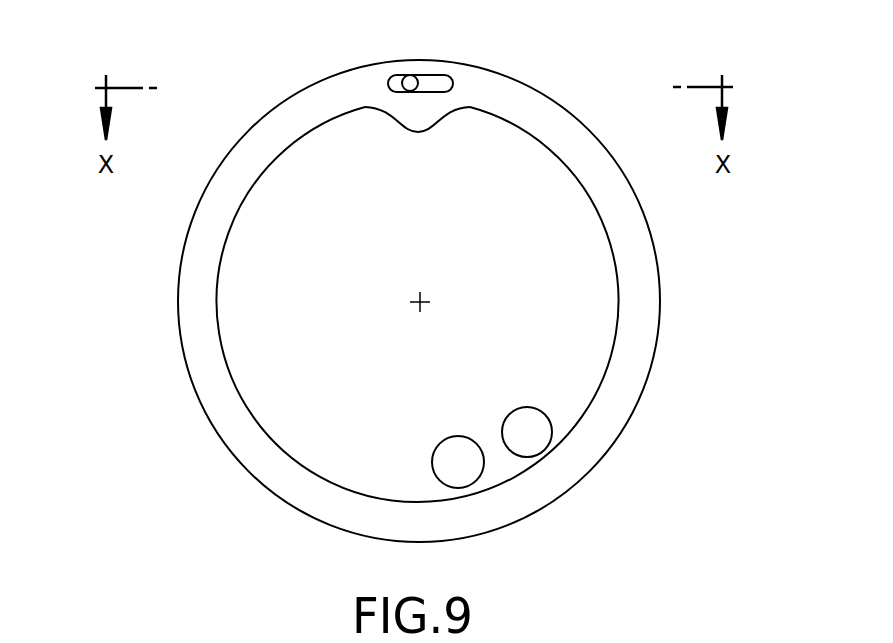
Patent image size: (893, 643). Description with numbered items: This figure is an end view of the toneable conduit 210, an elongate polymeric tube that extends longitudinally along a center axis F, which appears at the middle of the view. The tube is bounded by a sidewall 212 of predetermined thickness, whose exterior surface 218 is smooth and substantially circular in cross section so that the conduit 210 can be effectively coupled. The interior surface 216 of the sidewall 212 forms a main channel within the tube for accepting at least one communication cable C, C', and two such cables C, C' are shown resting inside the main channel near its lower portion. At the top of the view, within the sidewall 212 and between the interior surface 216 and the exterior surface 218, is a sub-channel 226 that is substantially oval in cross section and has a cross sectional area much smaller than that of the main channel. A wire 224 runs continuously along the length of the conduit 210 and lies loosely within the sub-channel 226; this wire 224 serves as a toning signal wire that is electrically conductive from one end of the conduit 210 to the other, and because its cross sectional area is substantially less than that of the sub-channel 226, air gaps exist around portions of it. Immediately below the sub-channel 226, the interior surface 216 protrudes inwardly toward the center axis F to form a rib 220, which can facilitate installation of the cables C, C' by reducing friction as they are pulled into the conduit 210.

The toneable conduit 210 is at (700, 316).
The sidewall 212 is at (620, 204).
The interior surface 216 is at (238, 390).
The exterior surface 218 is at (200, 203).
The rib 220 is at (418, 132).
The wire 224 is at (419, 89).
The sub-channel 226 is at (387, 92).
The axis F is at (422, 299).
The communication cable C is at (458, 429).
The communication cable C' is at (527, 397).